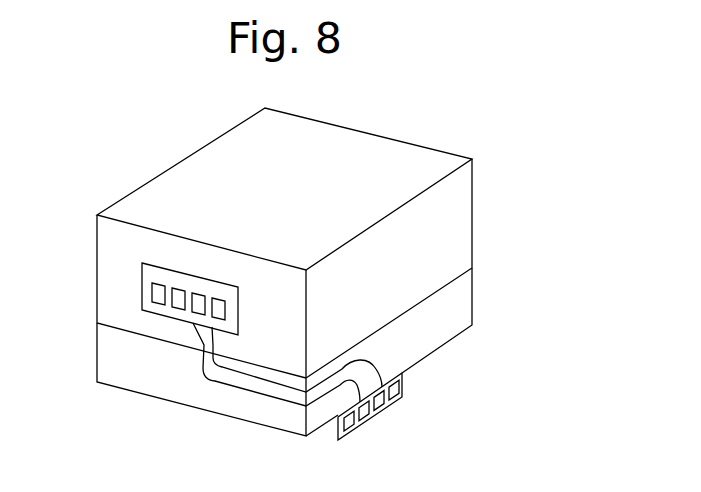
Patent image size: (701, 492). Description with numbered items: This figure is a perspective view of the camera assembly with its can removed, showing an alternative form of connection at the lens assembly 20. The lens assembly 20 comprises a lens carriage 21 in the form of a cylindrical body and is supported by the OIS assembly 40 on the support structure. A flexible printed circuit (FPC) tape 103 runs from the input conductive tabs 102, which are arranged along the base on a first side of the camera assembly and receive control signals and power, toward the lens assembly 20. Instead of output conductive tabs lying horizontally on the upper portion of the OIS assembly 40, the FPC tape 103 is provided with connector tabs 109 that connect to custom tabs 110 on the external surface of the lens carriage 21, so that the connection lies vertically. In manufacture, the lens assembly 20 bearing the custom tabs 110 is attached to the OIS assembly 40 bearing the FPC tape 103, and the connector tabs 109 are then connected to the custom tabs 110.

The lens assembly 20 is at (286, 243).
The lens carriage 21 is at (115, 282).
The OIS assembly 40 is at (458, 303).
The custom tabs 110 is at (180, 305).
The connector tabs 109 is at (220, 335).
The flexible printed circuit (FPC) tape 103 is at (258, 392).
The input conductive tabs 102 is at (370, 415).